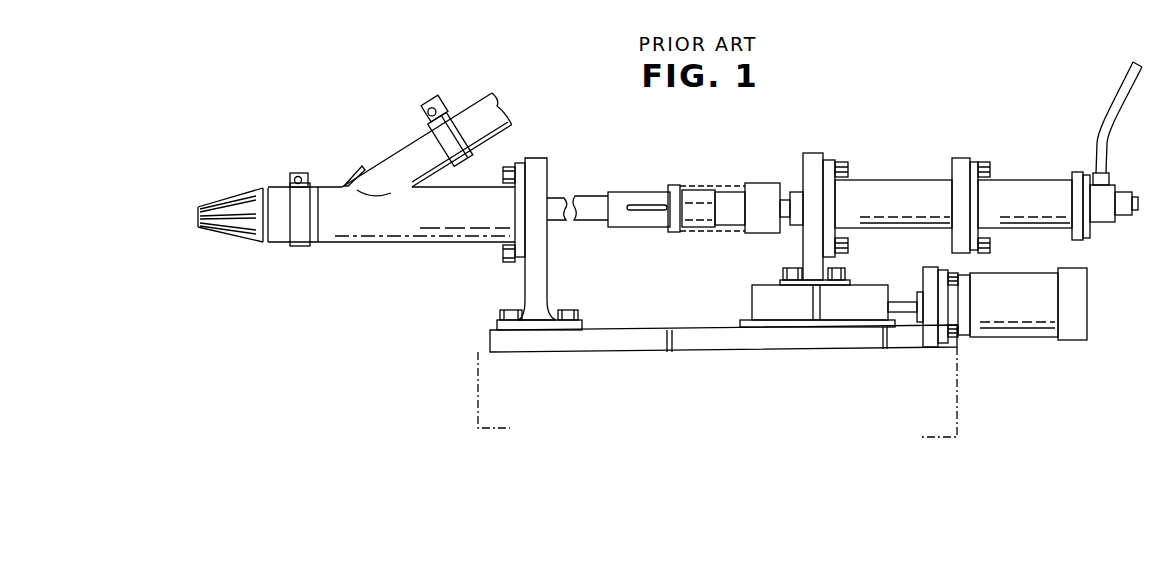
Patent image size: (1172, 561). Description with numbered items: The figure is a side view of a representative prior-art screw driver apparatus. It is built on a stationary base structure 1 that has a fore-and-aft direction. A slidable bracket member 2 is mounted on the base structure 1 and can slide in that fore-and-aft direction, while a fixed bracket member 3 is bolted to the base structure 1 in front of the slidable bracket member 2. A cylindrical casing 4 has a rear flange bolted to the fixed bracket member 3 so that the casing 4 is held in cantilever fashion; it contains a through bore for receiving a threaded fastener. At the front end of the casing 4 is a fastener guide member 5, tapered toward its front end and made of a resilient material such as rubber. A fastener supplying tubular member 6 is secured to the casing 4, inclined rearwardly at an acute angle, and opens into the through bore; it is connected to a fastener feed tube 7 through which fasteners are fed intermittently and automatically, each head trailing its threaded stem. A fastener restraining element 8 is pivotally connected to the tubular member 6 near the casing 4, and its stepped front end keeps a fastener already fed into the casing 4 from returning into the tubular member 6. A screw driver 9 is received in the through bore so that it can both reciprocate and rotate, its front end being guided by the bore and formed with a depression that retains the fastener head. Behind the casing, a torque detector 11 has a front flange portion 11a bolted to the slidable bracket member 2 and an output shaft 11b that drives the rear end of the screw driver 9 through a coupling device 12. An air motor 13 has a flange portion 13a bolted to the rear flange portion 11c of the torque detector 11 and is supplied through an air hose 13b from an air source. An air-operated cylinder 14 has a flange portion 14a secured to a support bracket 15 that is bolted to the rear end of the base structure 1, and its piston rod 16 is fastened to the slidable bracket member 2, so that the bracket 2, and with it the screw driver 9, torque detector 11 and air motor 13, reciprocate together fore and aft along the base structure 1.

The stationary base structure 1 is at (478, 408).
The slidable bracket member 2 is at (752, 304).
The fixed bracket member 3 is at (548, 300).
The cylindrical casing 4 is at (423, 243).
The fastener guide member 5 is at (244, 238).
The fastener supplying tubular member 6 is at (405, 148).
The fastener feed tube 7 is at (477, 102).
The fastener restraining element 8 is at (357, 172).
The screw driver 9 is at (580, 176).
The torque detector 11 is at (905, 174).
The front flange portion 11a is at (861, 139).
The output shaft 11b is at (785, 195).
The rear flange portion 11c is at (957, 158).
The coupling device 12 is at (692, 190).
The air motor 13 is at (1032, 172).
The flange portion 13a is at (1024, 154).
The air hose 13b is at (1120, 92).
The air-operated cylinder 14 is at (1013, 338).
The flange portion 14a is at (942, 265).
The support bracket 15 is at (922, 273).
The piston rod 16 is at (886, 306).